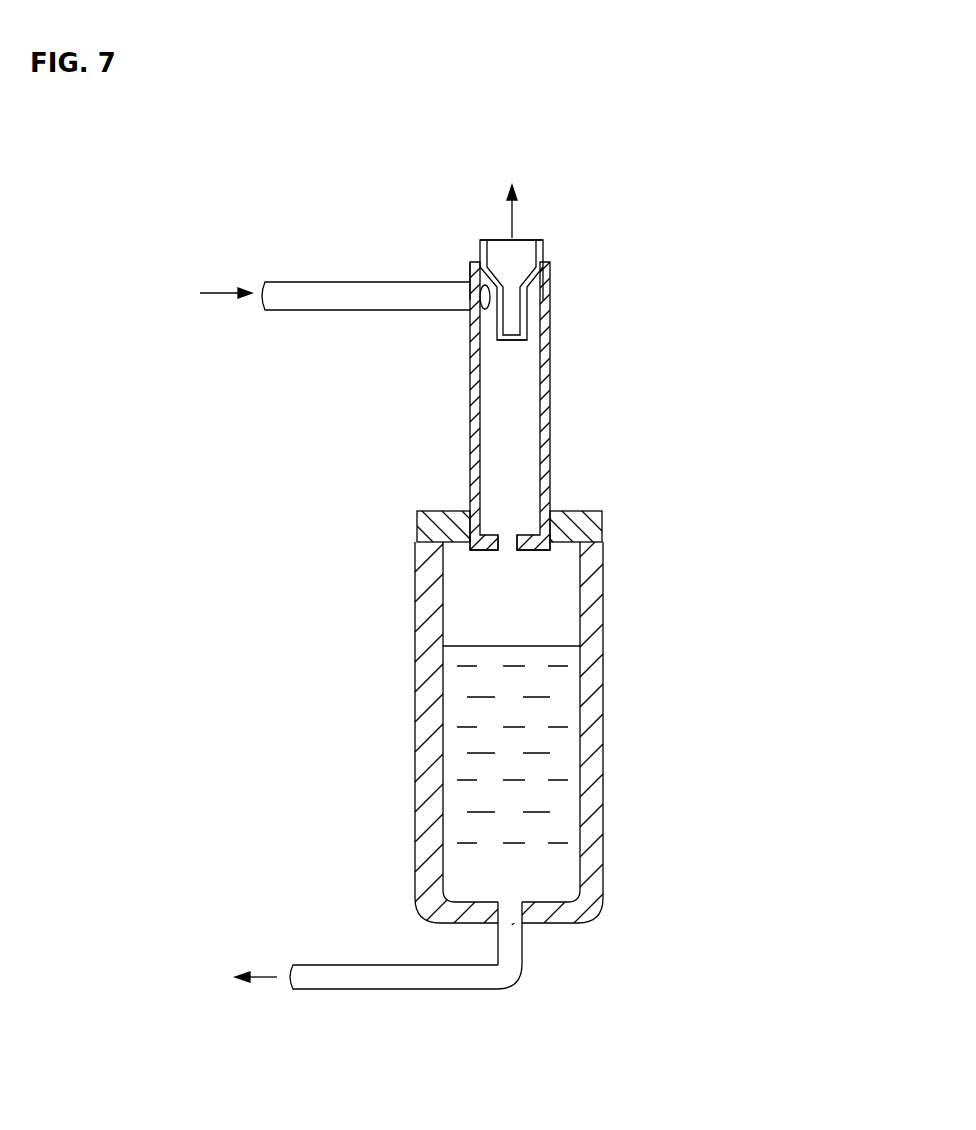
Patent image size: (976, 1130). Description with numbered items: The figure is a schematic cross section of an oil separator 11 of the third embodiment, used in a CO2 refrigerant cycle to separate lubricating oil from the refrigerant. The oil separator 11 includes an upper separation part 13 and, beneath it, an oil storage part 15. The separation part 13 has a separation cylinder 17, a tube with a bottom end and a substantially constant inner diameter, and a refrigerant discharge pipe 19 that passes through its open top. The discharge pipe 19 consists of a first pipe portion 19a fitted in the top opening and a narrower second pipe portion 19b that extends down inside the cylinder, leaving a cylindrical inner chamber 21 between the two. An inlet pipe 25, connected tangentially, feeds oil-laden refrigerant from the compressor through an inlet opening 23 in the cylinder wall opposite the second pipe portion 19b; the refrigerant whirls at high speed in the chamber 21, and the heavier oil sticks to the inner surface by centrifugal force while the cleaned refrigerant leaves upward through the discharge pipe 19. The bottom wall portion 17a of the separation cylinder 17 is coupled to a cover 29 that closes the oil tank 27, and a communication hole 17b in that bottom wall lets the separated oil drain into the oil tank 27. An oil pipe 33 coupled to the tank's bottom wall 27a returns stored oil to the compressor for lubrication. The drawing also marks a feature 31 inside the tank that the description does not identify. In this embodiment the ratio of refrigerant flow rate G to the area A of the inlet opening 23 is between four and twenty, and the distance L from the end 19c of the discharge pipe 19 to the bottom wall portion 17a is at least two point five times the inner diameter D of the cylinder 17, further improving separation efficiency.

The oil separator 11 is at (628, 228).
The separation part 13 is at (553, 341).
The oil storage part 15 is at (603, 685).
The separation cylinder 17 is at (550, 412).
The bottom wall portion 17a is at (470, 508).
The communication hole 17b is at (550, 507).
The refrigerant discharge pipe 19 is at (543, 242).
The first pipe portion 19a is at (480, 262).
The second pipe portion 19b is at (552, 295).
The end of refrigerant discharge pipe 19c is at (515, 340).
The cylindrical inner chamber 21 is at (470, 350).
The inlet opening 23 is at (478, 294).
The inlet pipe 25 is at (373, 293).
The oil tank 27 is at (603, 745).
The bottom wall of oil tank 27a is at (558, 927).
The cover 29 is at (428, 523).
The space above liquid 31 is at (553, 612).
The oil pipe 33 is at (421, 980).